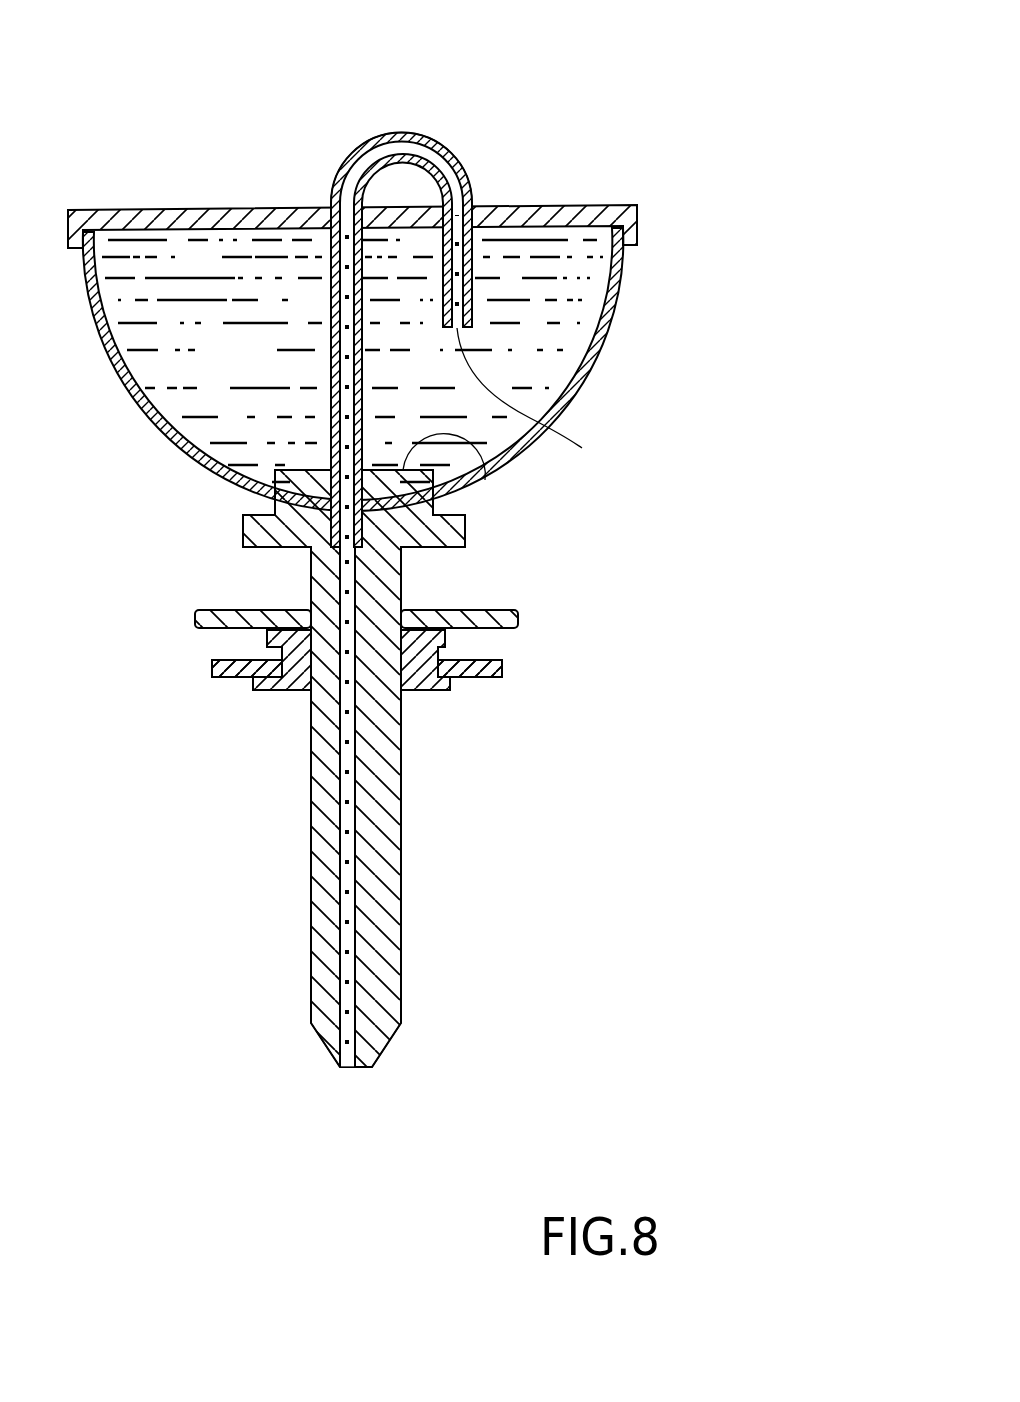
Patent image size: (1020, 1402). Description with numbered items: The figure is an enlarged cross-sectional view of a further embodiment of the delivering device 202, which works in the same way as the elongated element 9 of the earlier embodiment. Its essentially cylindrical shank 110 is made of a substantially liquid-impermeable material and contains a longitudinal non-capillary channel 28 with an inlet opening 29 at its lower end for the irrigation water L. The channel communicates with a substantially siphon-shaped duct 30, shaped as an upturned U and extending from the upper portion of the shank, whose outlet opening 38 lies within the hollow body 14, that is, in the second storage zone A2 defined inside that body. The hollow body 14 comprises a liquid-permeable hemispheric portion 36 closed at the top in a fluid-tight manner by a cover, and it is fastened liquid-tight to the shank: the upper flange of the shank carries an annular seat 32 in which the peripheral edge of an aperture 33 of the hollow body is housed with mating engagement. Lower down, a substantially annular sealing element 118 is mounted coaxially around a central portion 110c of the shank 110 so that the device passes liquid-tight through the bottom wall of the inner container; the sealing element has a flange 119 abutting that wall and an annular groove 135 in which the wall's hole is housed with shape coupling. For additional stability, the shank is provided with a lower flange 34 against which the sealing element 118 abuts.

The hollow body 14 is at (508, 197).
The siphon-shaped duct 30 is at (403, 132).
The irrigation water L is at (358, 150).
The delivering device 202 is at (708, 230).
The second storage zone A2 is at (253, 370).
The hemispheric portion 36 is at (140, 408).
The outlet opening 38 is at (541, 409).
The aperture 33 is at (492, 483).
The annular seat 32 is at (443, 547).
The lower flange 34 is at (518, 617).
The annular groove 135 is at (280, 653).
The sealing element 118 is at (228, 680).
The flange 119 is at (502, 668).
The elongated element 9 is at (582, 775).
The central portion 110c is at (402, 720).
The shank 110 is at (313, 915).
The non-capillary channel 28 is at (355, 893).
The inlet opening 29 is at (352, 1068).